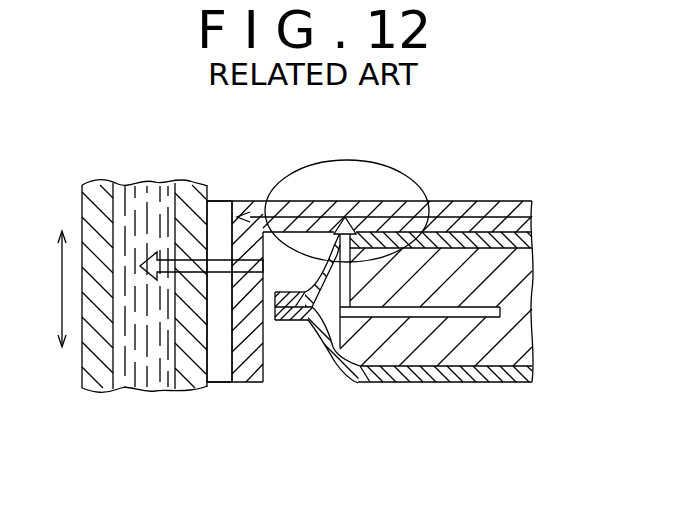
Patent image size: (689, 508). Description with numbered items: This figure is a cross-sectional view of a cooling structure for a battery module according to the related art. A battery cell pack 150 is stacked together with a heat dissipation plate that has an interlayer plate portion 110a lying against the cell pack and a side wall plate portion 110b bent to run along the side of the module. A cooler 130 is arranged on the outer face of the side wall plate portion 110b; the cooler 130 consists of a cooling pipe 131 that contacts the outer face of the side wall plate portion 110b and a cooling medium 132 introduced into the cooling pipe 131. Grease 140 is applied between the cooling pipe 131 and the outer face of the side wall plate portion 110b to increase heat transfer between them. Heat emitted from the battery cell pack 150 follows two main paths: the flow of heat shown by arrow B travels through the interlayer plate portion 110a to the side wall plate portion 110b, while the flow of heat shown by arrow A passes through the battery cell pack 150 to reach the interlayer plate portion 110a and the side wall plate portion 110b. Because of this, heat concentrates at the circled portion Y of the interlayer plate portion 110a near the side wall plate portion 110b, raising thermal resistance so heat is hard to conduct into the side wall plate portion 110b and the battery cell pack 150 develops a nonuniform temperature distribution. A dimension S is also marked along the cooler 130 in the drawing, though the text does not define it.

The cooler 130 is at (139, 301).
The cooling pipe 131 is at (100, 385).
The cooling medium 132 is at (138, 392).
The grease 140 is at (220, 372).
The interlayer plate portion 110a is at (470, 212).
The side wall plate portion 110b is at (247, 368).
The battery cell pack 150 is at (500, 355).
The flow of heat A is at (500, 303).
The flow of heat B is at (525, 207).
The portion Y is at (346, 160).
The stroke range S is at (52, 289).